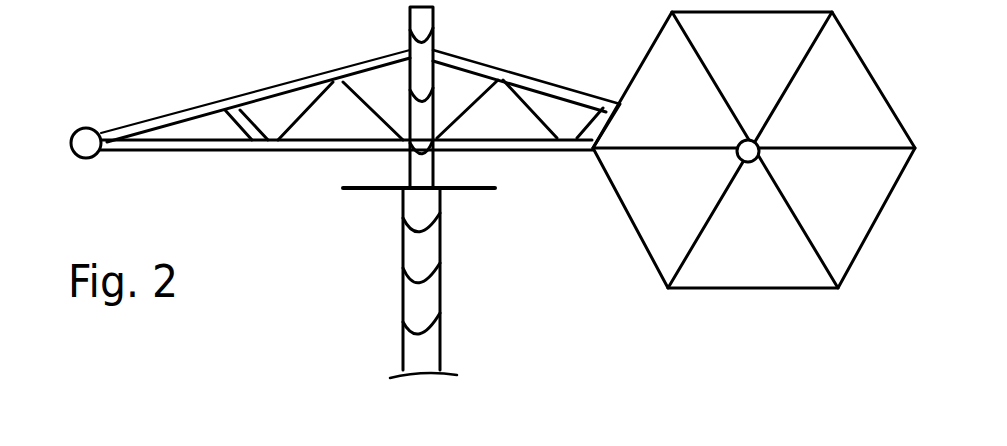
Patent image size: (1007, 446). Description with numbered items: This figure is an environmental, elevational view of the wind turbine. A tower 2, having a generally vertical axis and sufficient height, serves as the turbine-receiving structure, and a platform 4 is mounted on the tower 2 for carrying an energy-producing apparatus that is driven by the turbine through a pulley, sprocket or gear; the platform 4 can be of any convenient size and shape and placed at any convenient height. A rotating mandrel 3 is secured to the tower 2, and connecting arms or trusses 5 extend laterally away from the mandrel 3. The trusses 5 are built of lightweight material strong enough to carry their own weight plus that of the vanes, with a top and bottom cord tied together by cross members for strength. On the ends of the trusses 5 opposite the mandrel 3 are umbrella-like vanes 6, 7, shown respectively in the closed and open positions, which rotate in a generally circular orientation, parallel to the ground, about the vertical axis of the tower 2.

The tower 2 is at (440, 303).
The rotating mandrel 3 is at (438, 25).
The platform 4 is at (478, 195).
The arms or trusses 5 is at (272, 150).
The umbrella-like vane 6 is at (72, 140).
The umbrella-like vane 7 is at (880, 73).